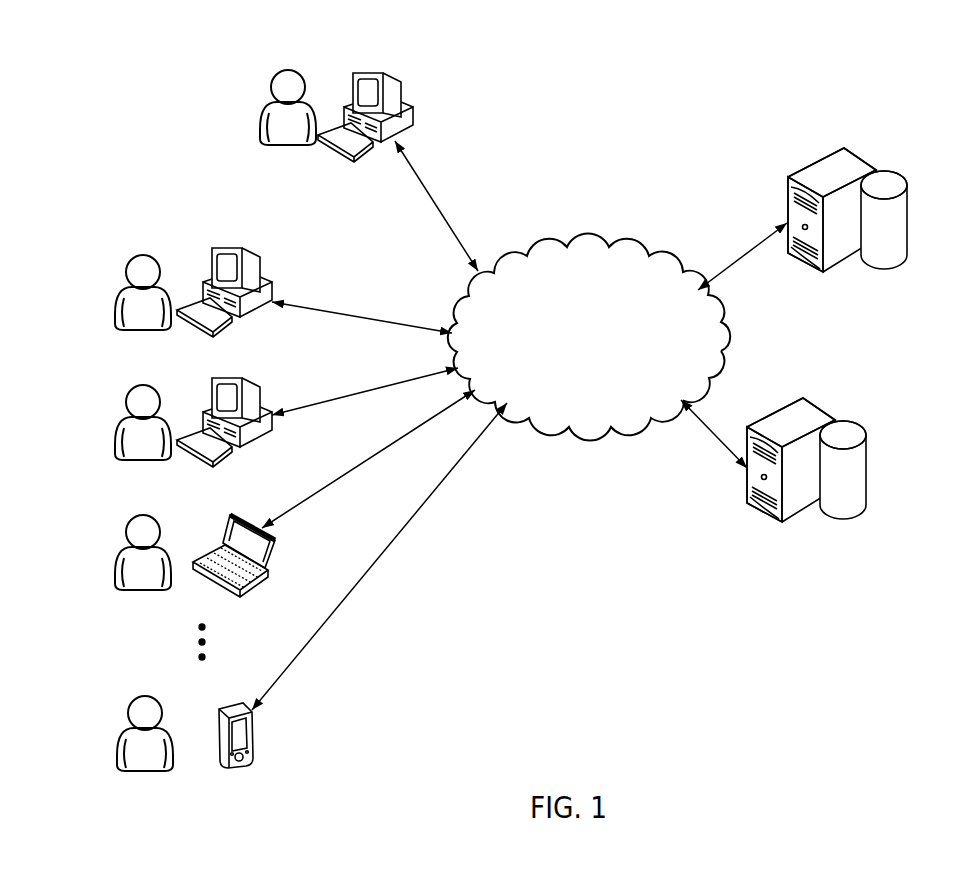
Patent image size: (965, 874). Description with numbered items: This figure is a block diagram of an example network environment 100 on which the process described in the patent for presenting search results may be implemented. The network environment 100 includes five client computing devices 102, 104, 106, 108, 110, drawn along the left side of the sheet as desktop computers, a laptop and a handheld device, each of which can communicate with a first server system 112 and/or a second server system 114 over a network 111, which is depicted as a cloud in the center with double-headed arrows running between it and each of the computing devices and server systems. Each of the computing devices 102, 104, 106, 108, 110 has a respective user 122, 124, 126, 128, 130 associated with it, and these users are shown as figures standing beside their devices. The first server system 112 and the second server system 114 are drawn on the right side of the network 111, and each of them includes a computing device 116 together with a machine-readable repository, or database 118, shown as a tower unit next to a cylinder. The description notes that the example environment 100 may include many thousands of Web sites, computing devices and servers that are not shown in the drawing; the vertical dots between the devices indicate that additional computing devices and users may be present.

The network environment 100 is at (687, 125).
The computing device 102 is at (372, 72).
The computing device 104 is at (226, 248).
The computing device 106 is at (226, 378).
The computing device 108 is at (235, 515).
The computing device 110 is at (218, 703).
The network 111 is at (598, 247).
The first server system 112 is at (798, 282).
The second server system 114 is at (758, 527).
The computing device 116 is at (854, 166).
The database 118 is at (908, 215).
The user 122 is at (264, 102).
The user 124 is at (150, 256).
The user 126 is at (152, 386).
The user 128 is at (154, 516).
The user 130 is at (155, 698).